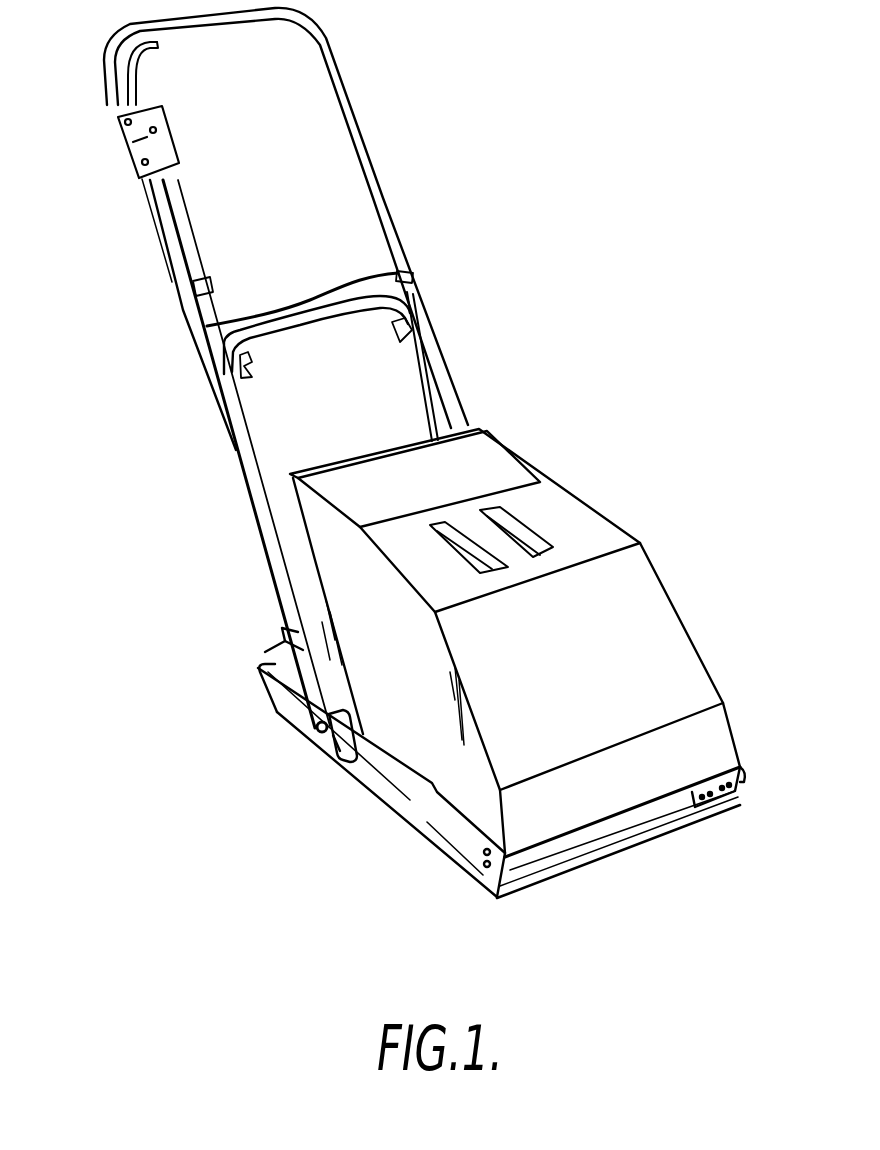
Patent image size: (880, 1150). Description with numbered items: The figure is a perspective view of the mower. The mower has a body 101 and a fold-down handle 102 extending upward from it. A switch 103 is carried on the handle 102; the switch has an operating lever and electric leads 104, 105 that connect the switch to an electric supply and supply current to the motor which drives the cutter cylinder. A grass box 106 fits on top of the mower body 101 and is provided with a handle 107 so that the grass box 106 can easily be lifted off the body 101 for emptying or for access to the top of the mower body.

The body 101 is at (643, 821).
The fold-down handle 102 is at (187, 292).
The switch 103 is at (140, 145).
The electric lead 104 is at (157, 210).
The electric lead 105 is at (420, 387).
The grass box 106 is at (620, 650).
The handle 107 is at (517, 533).